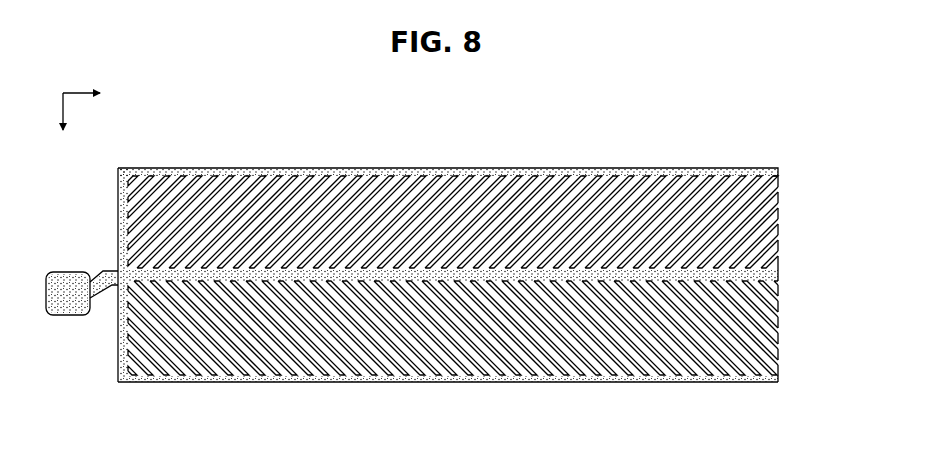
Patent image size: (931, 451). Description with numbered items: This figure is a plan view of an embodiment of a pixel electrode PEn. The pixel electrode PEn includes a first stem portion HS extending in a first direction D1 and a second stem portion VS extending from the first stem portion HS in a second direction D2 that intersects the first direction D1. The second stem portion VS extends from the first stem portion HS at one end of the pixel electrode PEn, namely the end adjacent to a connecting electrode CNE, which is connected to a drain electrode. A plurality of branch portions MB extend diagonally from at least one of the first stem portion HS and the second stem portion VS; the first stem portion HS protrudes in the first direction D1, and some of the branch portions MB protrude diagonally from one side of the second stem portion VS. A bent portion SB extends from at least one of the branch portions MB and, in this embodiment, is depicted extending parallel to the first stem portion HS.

The pixel electrode PEn is at (186, 134).
The bent portion SB is at (747, 168).
The branch portions MB is at (779, 177).
The first stem portion HS is at (779, 274).
The second stem portion VS is at (122, 385).
The connecting electrode CNE is at (78, 272).
The first direction D1 is at (96, 95).
The second direction D2 is at (65, 125).